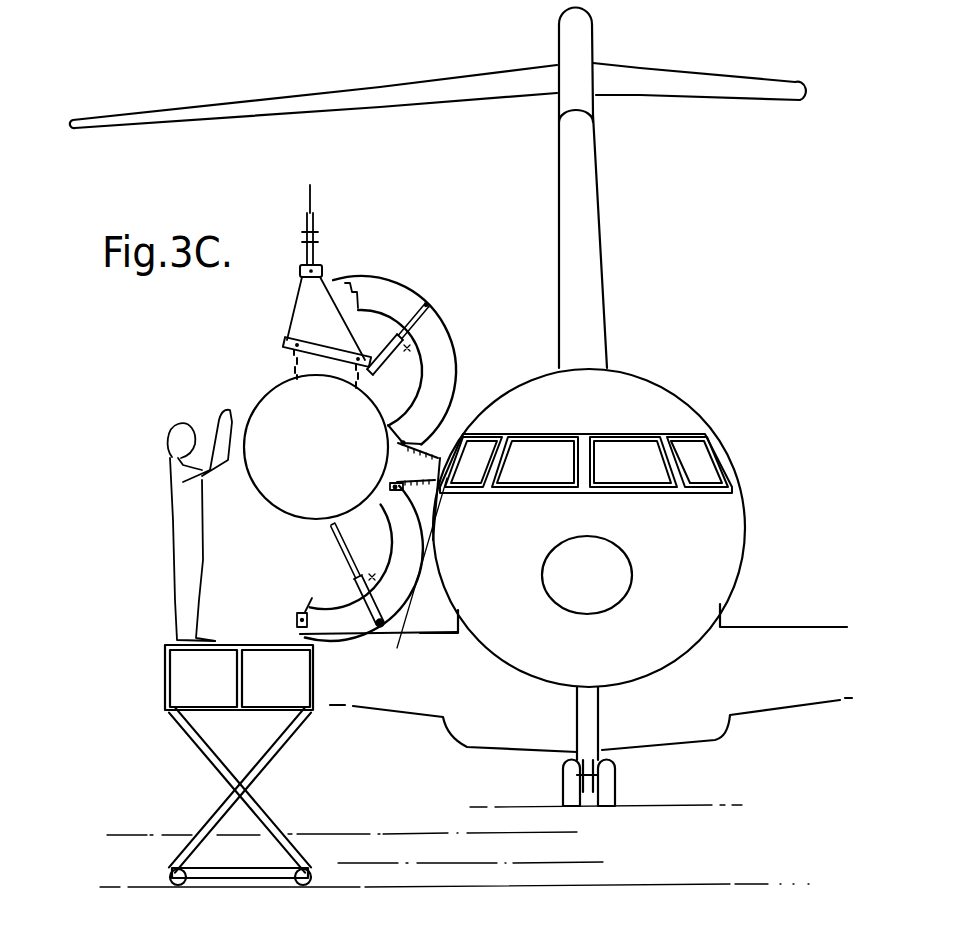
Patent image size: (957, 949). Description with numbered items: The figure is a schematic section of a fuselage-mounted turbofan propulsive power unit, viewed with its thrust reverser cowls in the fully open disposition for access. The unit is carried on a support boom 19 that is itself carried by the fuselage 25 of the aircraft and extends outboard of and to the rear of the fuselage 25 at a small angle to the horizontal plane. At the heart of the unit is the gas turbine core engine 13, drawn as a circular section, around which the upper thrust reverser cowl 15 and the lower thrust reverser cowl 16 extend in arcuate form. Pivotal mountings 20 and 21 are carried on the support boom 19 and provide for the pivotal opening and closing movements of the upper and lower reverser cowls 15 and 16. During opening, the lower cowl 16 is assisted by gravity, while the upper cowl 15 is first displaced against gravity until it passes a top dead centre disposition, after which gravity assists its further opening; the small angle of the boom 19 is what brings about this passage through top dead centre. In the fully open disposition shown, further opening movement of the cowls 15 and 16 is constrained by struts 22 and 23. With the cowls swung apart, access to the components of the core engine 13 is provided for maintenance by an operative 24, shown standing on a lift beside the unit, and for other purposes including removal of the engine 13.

The gas turbine core engine 13 is at (282, 413).
The upper thrust reverser cowl 15 is at (442, 360).
The lower thrust reverser cowl 16 is at (415, 600).
The support boom 19 is at (433, 453).
The pivotal mounting 20 is at (412, 437).
The pivotal mounting 21 is at (412, 490).
The strut 22 is at (400, 290).
The strut 23 is at (352, 568).
The operative 24 is at (182, 502).
The fuselage 25 is at (665, 410).